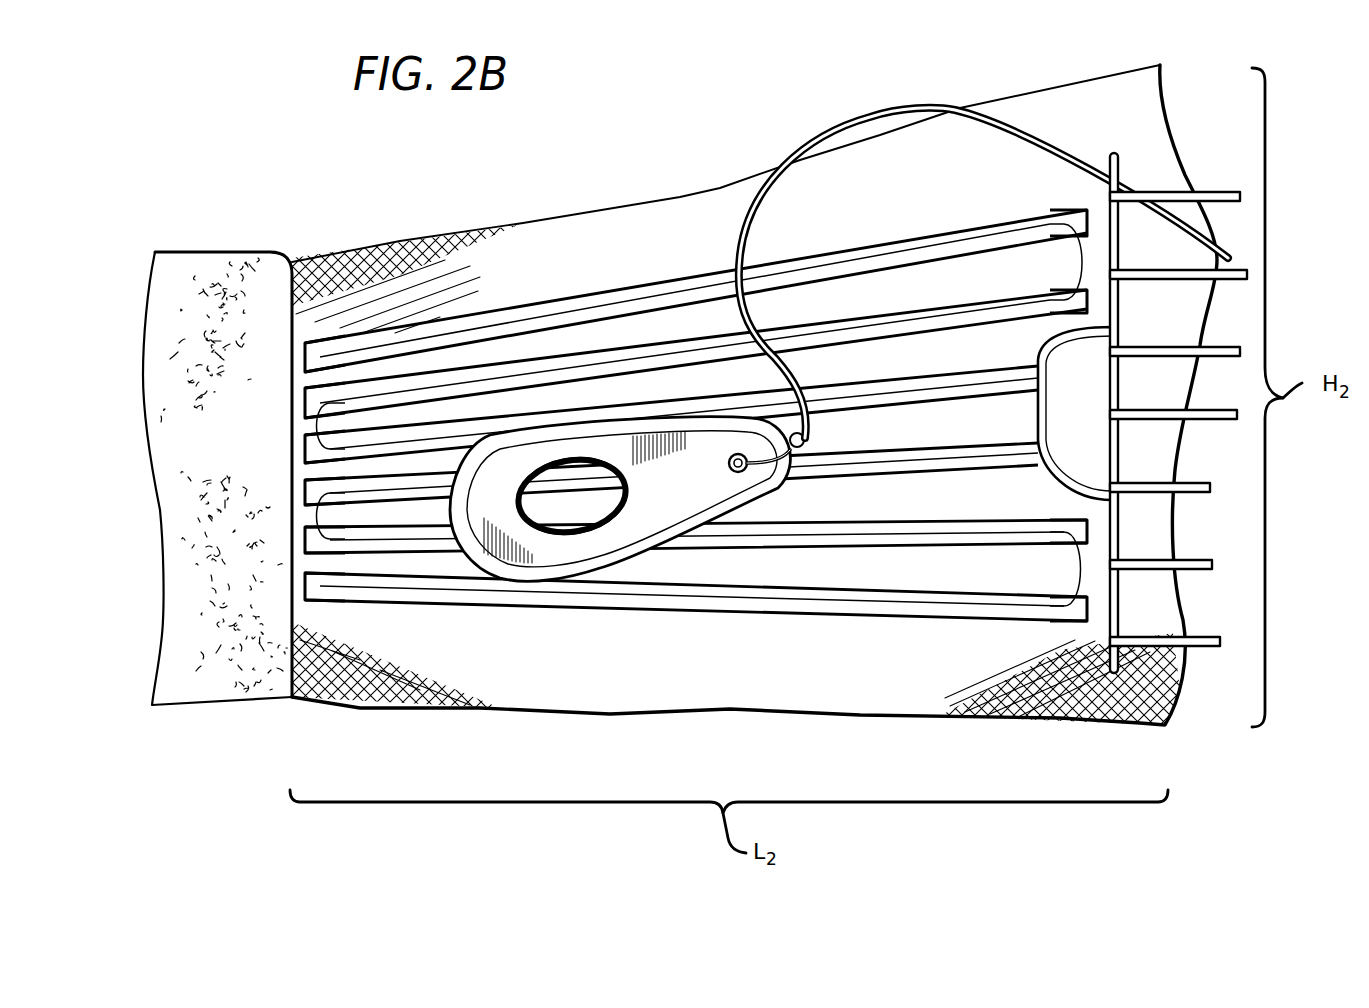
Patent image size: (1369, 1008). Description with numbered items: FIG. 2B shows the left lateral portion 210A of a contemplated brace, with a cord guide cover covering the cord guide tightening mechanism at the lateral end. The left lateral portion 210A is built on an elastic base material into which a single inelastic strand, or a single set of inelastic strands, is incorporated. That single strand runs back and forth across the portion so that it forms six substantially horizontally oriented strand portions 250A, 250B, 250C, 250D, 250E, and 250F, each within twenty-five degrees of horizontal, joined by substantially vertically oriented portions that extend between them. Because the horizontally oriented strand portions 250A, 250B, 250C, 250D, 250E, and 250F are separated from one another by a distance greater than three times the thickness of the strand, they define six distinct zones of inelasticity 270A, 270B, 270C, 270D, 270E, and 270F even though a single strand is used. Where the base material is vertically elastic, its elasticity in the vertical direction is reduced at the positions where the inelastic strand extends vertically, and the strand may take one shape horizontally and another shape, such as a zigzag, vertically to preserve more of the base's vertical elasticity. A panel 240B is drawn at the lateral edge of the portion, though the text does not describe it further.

The left lateral portion 210A is at (626, 698).
The second fabric panel 240B is at (199, 260).
The substantially horizontally oriented strand portion 250A is at (360, 350).
The substantially horizontally oriented strand portion 250B is at (460, 387).
The substantially horizontally oriented strand portion 250C is at (484, 432).
The substantially horizontally oriented strand portion 250D is at (855, 463).
The substantially horizontally oriented strand portion 250E is at (955, 535).
The substantially horizontally oriented strand portion 250F is at (1043, 610).
The zone of inelasticity 270A is at (298, 361).
The zone of inelasticity 270B is at (298, 408).
The zone of inelasticity 270C is at (298, 447).
The zone of inelasticity 270D is at (301, 501).
The zone of inelasticity 270E is at (301, 533).
The zone of inelasticity 270F is at (303, 583).